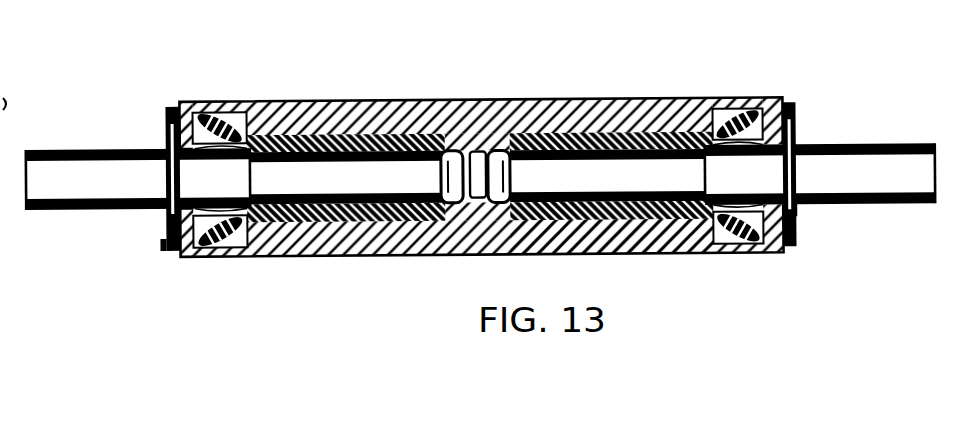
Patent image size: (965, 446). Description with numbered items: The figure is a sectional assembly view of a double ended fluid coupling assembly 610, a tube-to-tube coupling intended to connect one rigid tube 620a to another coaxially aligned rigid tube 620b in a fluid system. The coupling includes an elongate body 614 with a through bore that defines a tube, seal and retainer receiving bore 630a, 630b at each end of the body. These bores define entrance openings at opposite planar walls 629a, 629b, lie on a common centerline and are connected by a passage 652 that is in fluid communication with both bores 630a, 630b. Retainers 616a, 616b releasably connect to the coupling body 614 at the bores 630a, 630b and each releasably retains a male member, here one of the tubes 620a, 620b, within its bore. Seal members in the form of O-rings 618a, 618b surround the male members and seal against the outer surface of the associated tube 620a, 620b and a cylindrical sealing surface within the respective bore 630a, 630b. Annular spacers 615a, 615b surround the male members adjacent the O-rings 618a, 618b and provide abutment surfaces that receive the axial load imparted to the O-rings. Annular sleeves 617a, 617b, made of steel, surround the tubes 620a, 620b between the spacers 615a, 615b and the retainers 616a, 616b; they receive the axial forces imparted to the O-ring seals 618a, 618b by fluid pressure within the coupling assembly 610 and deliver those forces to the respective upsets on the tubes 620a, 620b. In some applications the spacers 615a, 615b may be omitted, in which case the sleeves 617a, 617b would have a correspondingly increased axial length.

The double ended fluid coupling assembly 610 is at (420, 259).
The elongate body 614 is at (258, 103).
The annular spacer 615a is at (345, 125).
The annular spacer 615b is at (585, 222).
The retainer 616a is at (165, 242).
The retainer 616b is at (797, 110).
The annular sleeve 617a is at (325, 224).
The annular sleeve 617b is at (678, 220).
The O-ring 618a is at (393, 122).
The O-ring 618b is at (548, 255).
The rigid tube 620a is at (46, 151).
The rigid tube 620b is at (840, 148).
The planar wall 629a is at (163, 103).
The planar wall 629b is at (788, 98).
The tube, seal and retainer receiving bore 630a is at (158, 223).
The tube, seal and retainer receiving bore 630b is at (803, 216).
The passage 652 is at (475, 175).